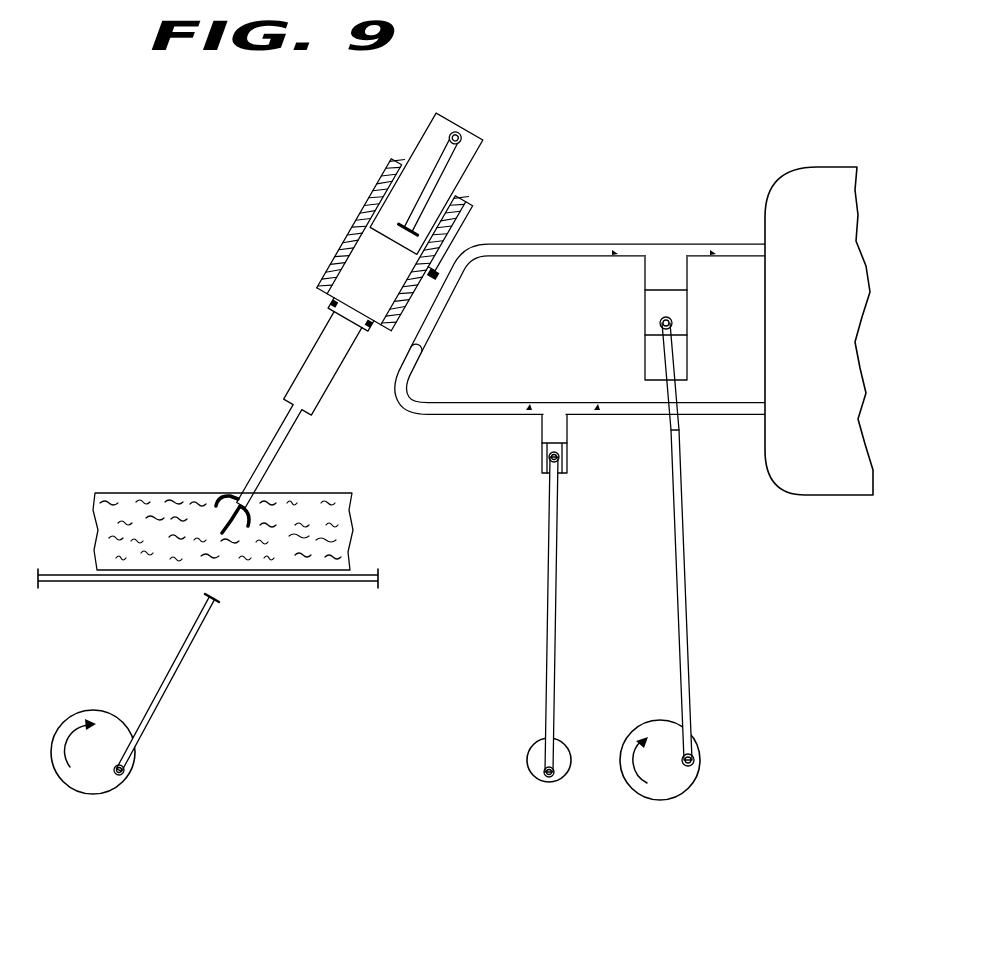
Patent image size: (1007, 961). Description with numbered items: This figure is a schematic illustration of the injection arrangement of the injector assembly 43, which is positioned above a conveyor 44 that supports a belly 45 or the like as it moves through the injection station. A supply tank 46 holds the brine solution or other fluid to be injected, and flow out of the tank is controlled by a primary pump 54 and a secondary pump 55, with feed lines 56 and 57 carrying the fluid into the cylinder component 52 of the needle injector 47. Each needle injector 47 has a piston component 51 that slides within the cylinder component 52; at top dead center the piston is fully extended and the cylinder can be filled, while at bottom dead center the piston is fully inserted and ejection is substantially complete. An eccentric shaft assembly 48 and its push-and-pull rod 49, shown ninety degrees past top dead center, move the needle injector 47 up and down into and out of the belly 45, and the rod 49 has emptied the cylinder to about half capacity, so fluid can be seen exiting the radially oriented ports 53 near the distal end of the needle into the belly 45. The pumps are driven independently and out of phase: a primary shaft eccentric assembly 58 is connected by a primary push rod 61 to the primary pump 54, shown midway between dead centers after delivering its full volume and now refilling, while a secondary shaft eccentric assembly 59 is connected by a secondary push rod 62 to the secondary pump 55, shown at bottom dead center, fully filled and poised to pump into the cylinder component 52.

The injector assembly 43 is at (272, 294).
The conveyor 44 is at (62, 572).
The belly 45 is at (363, 553).
The supply tank 46 is at (818, 167).
The needle injector 47 is at (297, 407).
The eccentric shaft assembly 48 is at (97, 780).
The push-and-pull rod 49 is at (187, 652).
The piston component 51 is at (426, 183).
The cylinder component 52 is at (398, 246).
The port 53 is at (266, 496).
The primary pump 54 is at (645, 310).
The secondary pump 55 is at (542, 451).
The feed line 56 is at (542, 243).
The feed line 57 is at (493, 401).
The primary shaft eccentric assembly 58 is at (670, 785).
The secondary shaft eccentric assembly 59 is at (527, 767).
The primary push rod 61 is at (680, 562).
The secondary push rod 62 is at (545, 592).